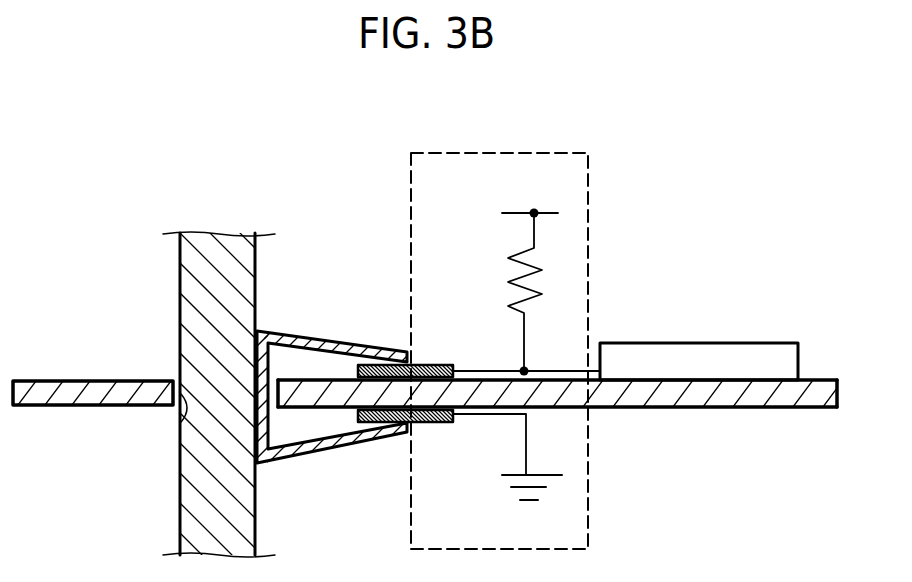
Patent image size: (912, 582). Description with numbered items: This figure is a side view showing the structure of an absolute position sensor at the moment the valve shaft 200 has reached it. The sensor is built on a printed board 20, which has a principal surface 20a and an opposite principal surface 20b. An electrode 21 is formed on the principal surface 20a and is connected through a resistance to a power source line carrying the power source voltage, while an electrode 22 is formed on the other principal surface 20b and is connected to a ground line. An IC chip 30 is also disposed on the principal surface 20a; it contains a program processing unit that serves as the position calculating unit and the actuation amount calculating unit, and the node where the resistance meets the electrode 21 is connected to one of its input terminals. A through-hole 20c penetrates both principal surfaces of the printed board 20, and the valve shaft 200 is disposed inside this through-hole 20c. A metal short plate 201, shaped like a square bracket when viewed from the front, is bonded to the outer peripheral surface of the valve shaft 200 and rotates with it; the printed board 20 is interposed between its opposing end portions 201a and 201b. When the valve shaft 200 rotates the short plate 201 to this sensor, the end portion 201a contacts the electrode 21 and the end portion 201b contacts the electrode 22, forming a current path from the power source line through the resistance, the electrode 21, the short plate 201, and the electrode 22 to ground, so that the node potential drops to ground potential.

The printed board 20 is at (48, 390).
The principal surface 20a is at (822, 378).
The other principal surface 20b is at (822, 410).
The through-hole 20c is at (180, 397).
The valve shaft 200 is at (190, 270).
The short plate 201 is at (333, 373).
The end portion 201a is at (368, 352).
The end portion 201b is at (360, 445).
The electrode 21 is at (440, 363).
The electrode 22 is at (440, 425).
The IC chip 30 is at (697, 350).